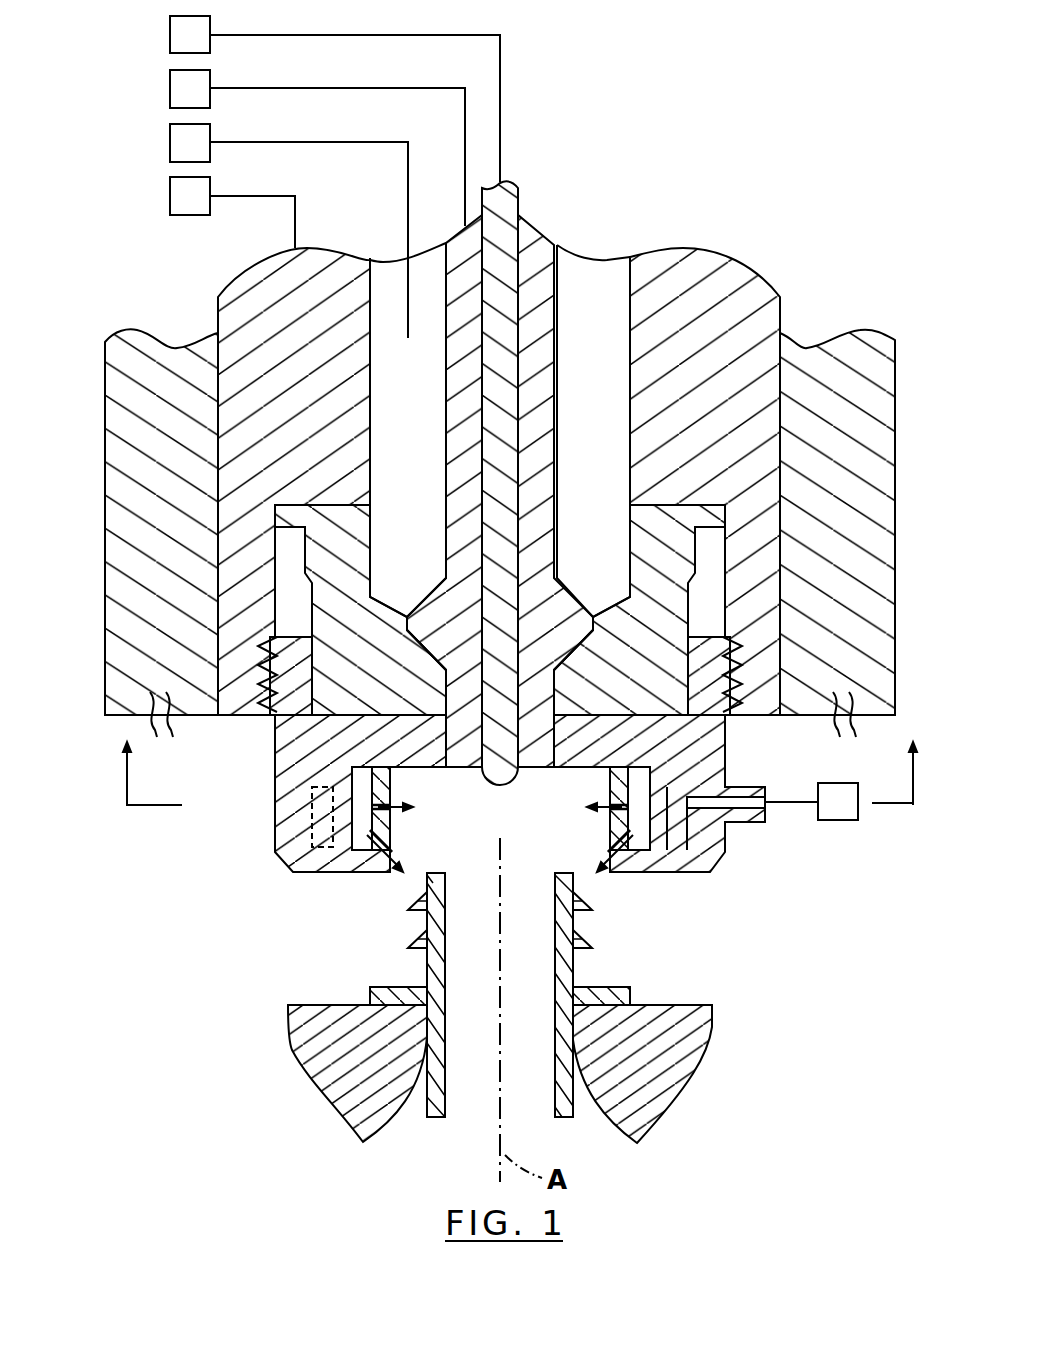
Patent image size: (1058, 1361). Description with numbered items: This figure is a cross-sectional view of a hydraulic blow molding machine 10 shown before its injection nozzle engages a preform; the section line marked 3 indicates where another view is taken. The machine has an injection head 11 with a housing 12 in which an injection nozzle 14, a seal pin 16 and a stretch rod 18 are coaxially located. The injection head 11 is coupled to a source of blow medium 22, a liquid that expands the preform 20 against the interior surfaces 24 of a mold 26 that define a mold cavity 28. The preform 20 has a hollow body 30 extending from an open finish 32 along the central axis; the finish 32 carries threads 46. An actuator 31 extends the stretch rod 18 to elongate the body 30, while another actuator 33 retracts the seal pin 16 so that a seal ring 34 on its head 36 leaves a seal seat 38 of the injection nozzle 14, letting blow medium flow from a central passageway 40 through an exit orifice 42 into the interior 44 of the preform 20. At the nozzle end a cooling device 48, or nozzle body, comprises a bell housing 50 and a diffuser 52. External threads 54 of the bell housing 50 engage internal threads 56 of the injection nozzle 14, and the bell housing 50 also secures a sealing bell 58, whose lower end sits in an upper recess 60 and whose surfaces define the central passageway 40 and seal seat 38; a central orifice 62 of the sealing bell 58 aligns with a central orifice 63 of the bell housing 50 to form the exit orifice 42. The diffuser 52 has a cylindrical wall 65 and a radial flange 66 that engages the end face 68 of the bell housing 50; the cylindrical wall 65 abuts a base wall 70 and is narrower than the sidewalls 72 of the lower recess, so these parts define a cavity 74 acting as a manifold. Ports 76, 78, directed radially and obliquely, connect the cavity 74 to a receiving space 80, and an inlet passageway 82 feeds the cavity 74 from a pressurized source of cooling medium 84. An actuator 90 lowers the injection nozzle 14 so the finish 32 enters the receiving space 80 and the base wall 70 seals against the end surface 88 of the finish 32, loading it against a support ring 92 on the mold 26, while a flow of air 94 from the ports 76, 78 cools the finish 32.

The hydraulic blow molding machine 10 is at (808, 66).
The injection head 11 is at (805, 255).
The housing 12 is at (843, 368).
The injection nozzle 14 is at (693, 320).
The seal pin 16 is at (556, 243).
The stretch rod 18 is at (505, 206).
The preform 20 is at (583, 1128).
The source of blow medium 22 is at (170, 142).
The interior surfaces 24 is at (390, 1120).
The mold 26 is at (345, 1078).
The mold cavity 28 is at (548, 1098).
The body 30 is at (575, 1095).
The actuator 31 is at (170, 33).
The finish 32 is at (625, 925).
The actuator 33 is at (170, 88).
The seal ring 34 is at (407, 647).
The head 36 is at (443, 613).
The seal seat 38 is at (570, 640).
The central passageway 40 is at (593, 316).
The exit orifice 42 is at (450, 740).
The interior 44 is at (488, 1034).
The threads 46 is at (408, 948).
The cooling device 48 is at (250, 825).
The bell housing 50 is at (303, 745).
The diffuser 52 is at (283, 860).
The external threads 54 is at (263, 643).
The internal threads 56 is at (268, 675).
The sealing bell 58 is at (337, 537).
The upper recess 60 is at (640, 715).
The central orifice 62 is at (549, 711).
The central orifice 63 is at (549, 737).
The cylindrical wall 65 is at (618, 782).
The radial flange 66 is at (702, 863).
The end face 68 is at (717, 862).
The base wall 70 is at (427, 804).
The sidewalls 72 is at (370, 807).
The cavity 74 is at (640, 830).
The port 76 is at (370, 790).
The port 78 is at (392, 843).
The receiving space 80 is at (541, 840).
The inlet passageway 82 is at (740, 813).
The source of cooling medium 84 is at (837, 812).
The end surface 88 is at (437, 883).
The actuator 90 is at (170, 196).
The support ring 92 is at (390, 987).
The flow of air 94 is at (383, 853).
The section line 3- 3 is at (523, 789).